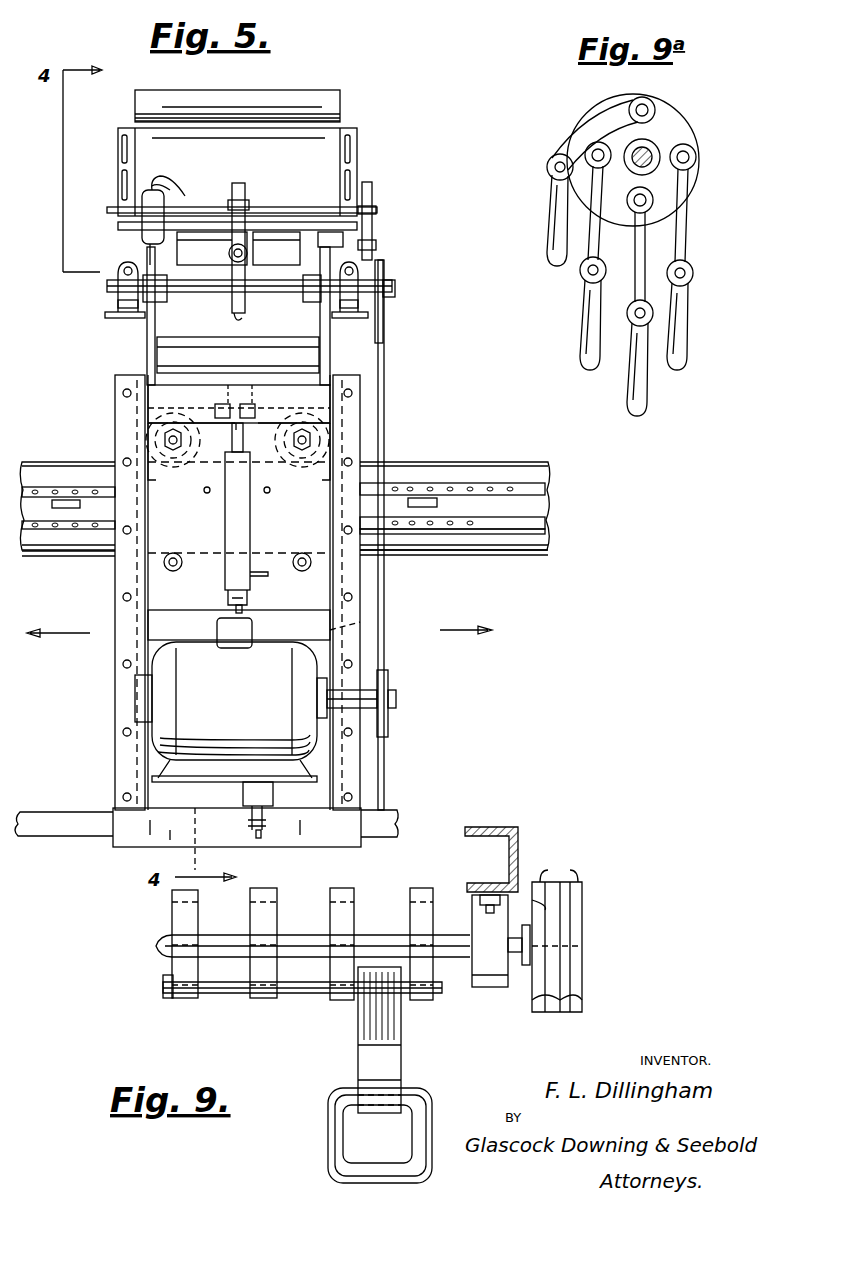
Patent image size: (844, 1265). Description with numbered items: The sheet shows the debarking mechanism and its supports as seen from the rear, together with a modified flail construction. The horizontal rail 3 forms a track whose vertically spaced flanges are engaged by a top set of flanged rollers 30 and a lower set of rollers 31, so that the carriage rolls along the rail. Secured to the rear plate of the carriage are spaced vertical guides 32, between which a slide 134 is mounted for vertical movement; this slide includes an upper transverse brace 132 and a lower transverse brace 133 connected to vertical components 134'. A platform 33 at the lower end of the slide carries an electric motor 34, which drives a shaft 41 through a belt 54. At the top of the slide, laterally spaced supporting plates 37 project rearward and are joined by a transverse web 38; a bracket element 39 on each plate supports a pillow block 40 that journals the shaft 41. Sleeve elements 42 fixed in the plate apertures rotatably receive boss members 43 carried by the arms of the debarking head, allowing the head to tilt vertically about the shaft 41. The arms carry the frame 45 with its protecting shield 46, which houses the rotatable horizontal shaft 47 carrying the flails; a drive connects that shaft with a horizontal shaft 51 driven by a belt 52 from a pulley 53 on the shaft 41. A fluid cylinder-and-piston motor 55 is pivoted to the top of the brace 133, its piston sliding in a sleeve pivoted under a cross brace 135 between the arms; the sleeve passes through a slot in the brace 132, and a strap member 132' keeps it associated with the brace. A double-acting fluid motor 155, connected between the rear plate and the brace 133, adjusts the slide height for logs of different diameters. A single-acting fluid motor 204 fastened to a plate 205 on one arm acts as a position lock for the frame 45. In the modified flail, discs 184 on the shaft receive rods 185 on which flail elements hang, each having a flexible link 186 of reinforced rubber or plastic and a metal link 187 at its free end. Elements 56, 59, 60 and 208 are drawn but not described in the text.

In FIG. 5, the horizontal rail 3 is at (505, 462).
In FIG. 5, the flanged rollers 30 is at (168, 470).
In FIG. 5, the lower set of rollers 31 is at (178, 572).
In FIG. 5, the vertical guides 32 is at (118, 752).
In FIG. 5, the platform 33 is at (278, 792).
In FIG. 5, the electric motor 34 is at (256, 698).
In FIG. 5, the supporting plates 37 is at (146, 355).
In FIG. 5, the transverse web 38 is at (307, 397).
In FIG. 5, the bracket element 39 is at (124, 318).
In FIG. 5, the pillow block 40 is at (350, 302).
In FIG. 5, the shaft 41 is at (396, 289).
In FIG. 5, the sleeve elements 42 is at (170, 296).
In FIG. 5, the boss members 43 is at (330, 240).
In FIG. 9, the frame 45 is at (518, 856).
In FIG. 5, the protecting shield 46 is at (340, 103).
In FIG. 5, the rotatable horizontal shaft 47 is at (374, 249).
In FIG. 5, the horizontal shaft 51 is at (373, 213).
In FIG. 5, the belt 52 is at (240, 188).
In FIG. 5, the pulley 53 is at (236, 318).
In FIG. 5, the belt 54 is at (385, 425).
In FIG. 5, the fluid cylinder-and-piston motor 55 is at (230, 524).
In FIG. 5, the rail 56 is at (495, 495).
In FIG. 5, the rail 59 is at (546, 533).
In FIG. 5, the stop 60 is at (432, 507).
In FIG. 5, the upper transverse brace 132 is at (239, 404).
In FIG. 5, the strap member 132' is at (274, 399).
In FIG. 5, the lower transverse brace 133 is at (330, 620).
In FIG. 5, the slide 134 is at (162, 618).
In FIG. 5, the vertical components 134' is at (377, 631).
In FIG. 5, the cross brace 135 is at (238, 355).
In FIG. 5, the double-acting fluid motor 155 is at (243, 794).
In FIG. 9, the discs 184 is at (408, 905).
In FIG. 9a, the discs 184 is at (692, 136).
In FIG. 9, the rods 185 is at (302, 995).
In FIG. 9a, the rods 185 is at (694, 159).
In FIG. 9, the flexible link 186 is at (402, 1048).
In FIG. 9a, the flexible link 186 is at (690, 243).
In FIG. 9, the metal link 187 is at (328, 1152).
In FIG. 9a, the metal link 187 is at (548, 208).
In FIG. 5, the single-acting fluid motor 204 is at (152, 190).
In FIG. 5, the plate 205 is at (212, 248).
In FIG. 5, the box 208 is at (268, 270).